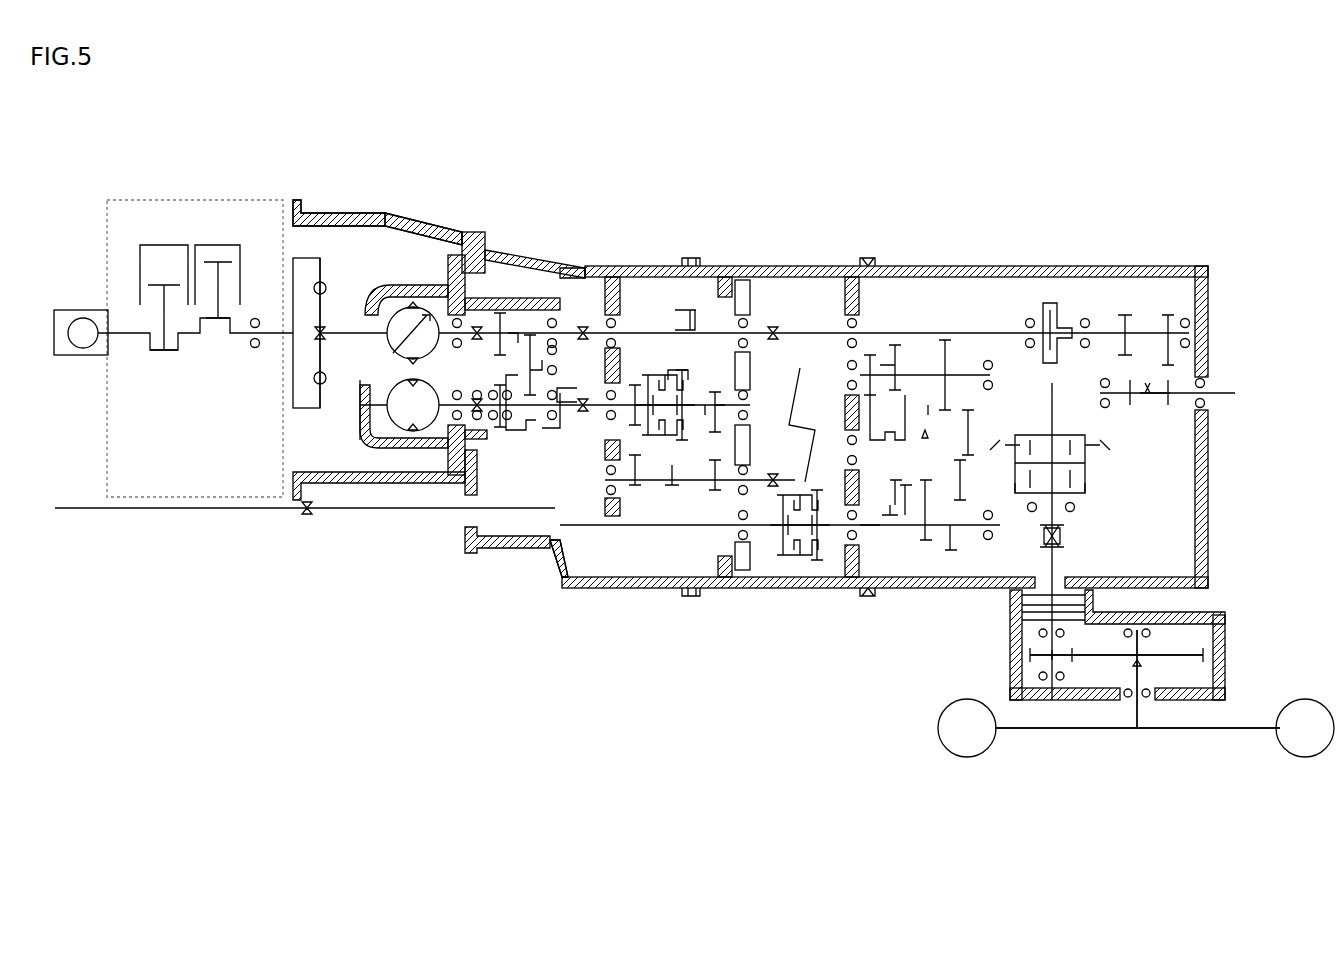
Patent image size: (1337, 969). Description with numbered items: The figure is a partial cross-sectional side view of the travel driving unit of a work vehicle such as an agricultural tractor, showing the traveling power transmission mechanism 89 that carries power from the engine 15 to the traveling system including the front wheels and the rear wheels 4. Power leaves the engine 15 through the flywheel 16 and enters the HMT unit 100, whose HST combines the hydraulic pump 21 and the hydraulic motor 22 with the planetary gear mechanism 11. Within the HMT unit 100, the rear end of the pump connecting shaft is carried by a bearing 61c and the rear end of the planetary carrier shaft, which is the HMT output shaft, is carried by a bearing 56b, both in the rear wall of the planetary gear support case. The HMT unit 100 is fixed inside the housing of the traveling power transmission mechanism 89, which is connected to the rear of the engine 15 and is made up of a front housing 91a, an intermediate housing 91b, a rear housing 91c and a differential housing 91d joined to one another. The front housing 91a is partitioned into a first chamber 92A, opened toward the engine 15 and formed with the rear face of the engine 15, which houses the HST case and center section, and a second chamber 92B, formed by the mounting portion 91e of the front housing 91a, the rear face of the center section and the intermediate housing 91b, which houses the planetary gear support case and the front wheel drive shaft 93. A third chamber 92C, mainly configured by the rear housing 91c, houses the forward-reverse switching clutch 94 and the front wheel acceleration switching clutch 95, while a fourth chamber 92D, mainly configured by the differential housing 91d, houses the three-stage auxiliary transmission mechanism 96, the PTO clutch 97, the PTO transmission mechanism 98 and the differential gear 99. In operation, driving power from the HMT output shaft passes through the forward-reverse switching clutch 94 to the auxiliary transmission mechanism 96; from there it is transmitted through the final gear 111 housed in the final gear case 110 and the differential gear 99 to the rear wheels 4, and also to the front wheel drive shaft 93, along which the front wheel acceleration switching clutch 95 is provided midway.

The rear wheel 4 is at (957, 729).
The planetary gear mechanism 11 is at (503, 476).
The engine 15 is at (197, 203).
The flywheel 16 is at (329, 272).
The hydraulic pump 21 is at (352, 320).
The hydraulic motor 22 is at (405, 425).
The bearing 56b is at (556, 495).
The bearing 61c is at (573, 282).
The traveling power transmission mechanism 89 is at (667, 543).
The front housing 91a is at (383, 216).
The intermediate housing 91b is at (525, 263).
The rear housing 91c is at (782, 262).
The differential housing 91d is at (942, 270).
The mounting portion 91e is at (473, 252).
The first chamber 92A is at (428, 230).
The second chamber 92B is at (608, 273).
The third chamber 92C is at (823, 278).
The fourth chamber 92D is at (1117, 278).
The front wheel drive shaft 93 is at (414, 508).
The forward-reverse switching clutch 94 is at (660, 388).
The front wheel acceleration switching clutch 95 is at (801, 556).
The three-stage auxiliary transmission mechanism 96 is at (920, 378).
The PTO clutch 97 is at (1044, 303).
The PTO transmission mechanism 98 is at (1156, 310).
The differential gear 99 is at (1020, 510).
The HMT unit 100 is at (338, 437).
The final gear case 110 is at (1010, 667).
The final gear 111 is at (1125, 658).